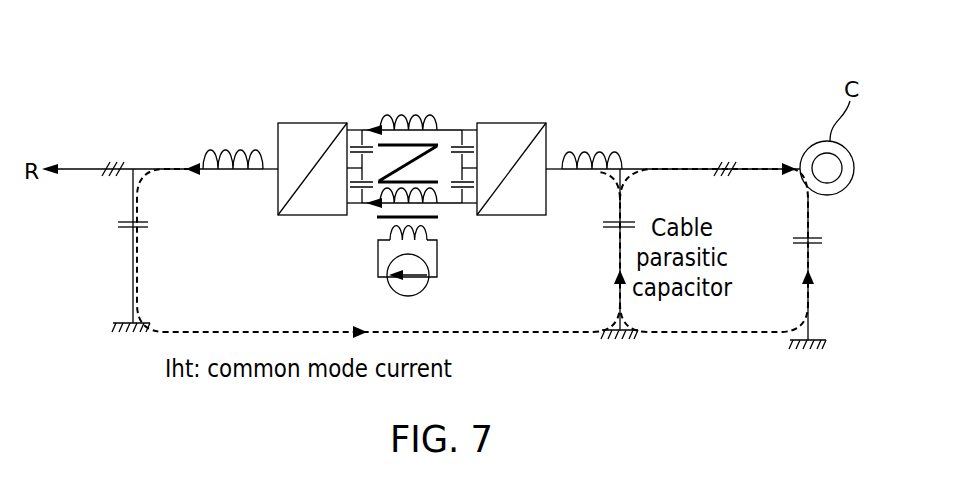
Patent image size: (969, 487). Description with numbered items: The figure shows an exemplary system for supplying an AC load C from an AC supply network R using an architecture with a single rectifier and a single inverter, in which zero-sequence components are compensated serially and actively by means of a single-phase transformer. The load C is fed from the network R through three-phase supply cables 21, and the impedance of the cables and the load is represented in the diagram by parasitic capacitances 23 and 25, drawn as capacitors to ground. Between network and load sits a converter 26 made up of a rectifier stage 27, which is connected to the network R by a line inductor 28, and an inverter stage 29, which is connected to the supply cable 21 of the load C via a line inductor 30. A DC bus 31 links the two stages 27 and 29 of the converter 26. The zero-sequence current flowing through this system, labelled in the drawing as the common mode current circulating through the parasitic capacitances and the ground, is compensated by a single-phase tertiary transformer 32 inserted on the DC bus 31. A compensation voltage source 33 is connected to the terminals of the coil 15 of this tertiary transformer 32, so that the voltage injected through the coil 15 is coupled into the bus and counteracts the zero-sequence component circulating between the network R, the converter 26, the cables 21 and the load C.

The coil 15 is at (390, 228).
The three-phase supply cables 21 is at (752, 169).
The parasitic capacitance 23 is at (140, 228).
The parasitic capacitance 25 is at (815, 245).
The converter 26 is at (435, 137).
The rectifier stage 27 is at (315, 123).
The line inductor 28 is at (233, 175).
The inverter stage 29 is at (510, 123).
The line inductor 30 is at (605, 152).
The DC bus 31 is at (466, 219).
The single-phase tertiary transformer 32 is at (442, 128).
The compensation voltage source 33 is at (425, 285).